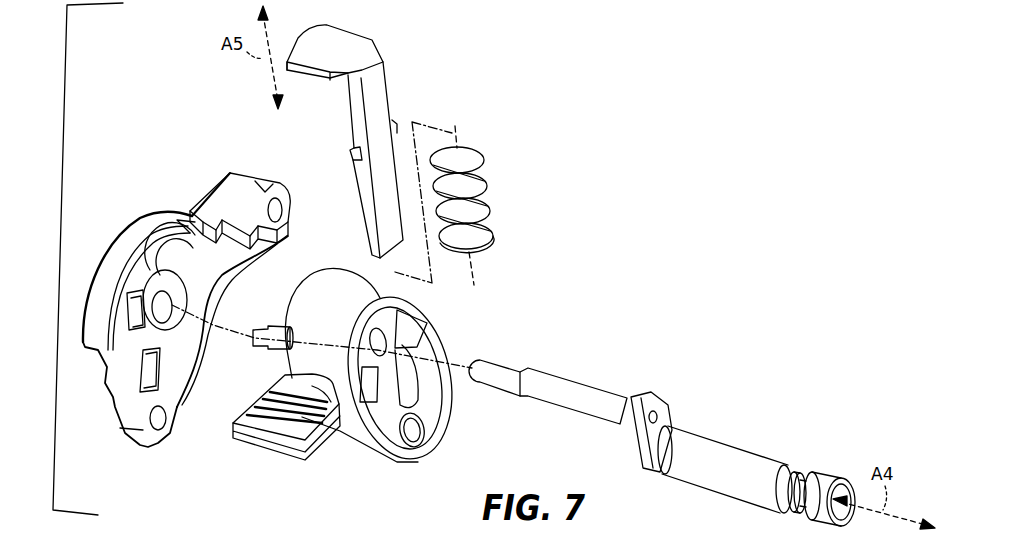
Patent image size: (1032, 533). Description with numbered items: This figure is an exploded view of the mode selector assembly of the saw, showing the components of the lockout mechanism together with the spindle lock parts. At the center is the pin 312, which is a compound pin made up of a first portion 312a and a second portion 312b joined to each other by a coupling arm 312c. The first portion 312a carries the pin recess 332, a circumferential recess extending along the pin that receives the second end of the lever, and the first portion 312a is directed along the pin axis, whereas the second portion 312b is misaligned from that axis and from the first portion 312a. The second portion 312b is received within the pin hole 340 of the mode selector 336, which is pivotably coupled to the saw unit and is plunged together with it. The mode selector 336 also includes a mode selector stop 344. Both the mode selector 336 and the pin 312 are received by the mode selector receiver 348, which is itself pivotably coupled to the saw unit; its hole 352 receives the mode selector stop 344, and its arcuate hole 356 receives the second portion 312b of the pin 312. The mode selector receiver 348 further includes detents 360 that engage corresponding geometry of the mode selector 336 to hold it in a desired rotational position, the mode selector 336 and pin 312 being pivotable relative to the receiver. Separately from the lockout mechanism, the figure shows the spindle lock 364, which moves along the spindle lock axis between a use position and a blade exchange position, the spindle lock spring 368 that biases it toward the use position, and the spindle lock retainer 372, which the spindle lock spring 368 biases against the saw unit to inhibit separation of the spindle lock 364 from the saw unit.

The pin 312 is at (662, 420).
The first portion 312a is at (723, 458).
The second portion 312b is at (530, 377).
The coupling arm 312c is at (665, 420).
The pin recess 332 is at (787, 467).
The mode selector 336 is at (250, 443).
The pin hole 340 is at (390, 312).
The mode selector stop 344 is at (260, 336).
The mode selector receiver 348 is at (228, 196).
The hole 352 is at (168, 300).
The arcuate hole 356 is at (178, 255).
The detents 360 is at (127, 303).
The spindle lock 364 is at (340, 40).
The spindle lock spring 368 is at (487, 177).
The spindle lock retainer 372 is at (394, 118).